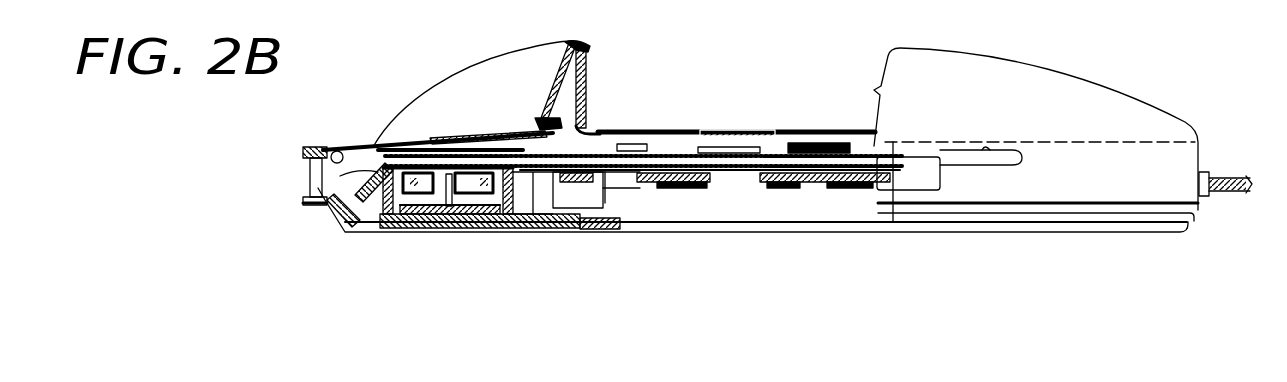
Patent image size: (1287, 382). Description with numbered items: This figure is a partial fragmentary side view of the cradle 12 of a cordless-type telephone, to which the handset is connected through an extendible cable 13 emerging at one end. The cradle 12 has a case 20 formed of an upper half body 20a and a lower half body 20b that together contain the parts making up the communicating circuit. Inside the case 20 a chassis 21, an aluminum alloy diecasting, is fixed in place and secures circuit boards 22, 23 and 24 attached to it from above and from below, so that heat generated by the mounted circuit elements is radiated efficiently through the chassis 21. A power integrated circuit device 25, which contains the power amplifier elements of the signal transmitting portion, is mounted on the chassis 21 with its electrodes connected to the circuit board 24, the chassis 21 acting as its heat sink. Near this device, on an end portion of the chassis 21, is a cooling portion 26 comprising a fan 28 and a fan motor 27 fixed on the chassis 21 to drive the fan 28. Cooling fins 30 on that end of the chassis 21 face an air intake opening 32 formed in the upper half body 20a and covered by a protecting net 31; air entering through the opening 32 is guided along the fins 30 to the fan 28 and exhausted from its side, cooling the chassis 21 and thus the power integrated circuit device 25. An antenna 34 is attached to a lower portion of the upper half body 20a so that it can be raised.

The cradle 12 is at (1074, 55).
The extendible cable 13 is at (1228, 180).
The case 20 is at (758, 255).
The upper half body 20a is at (1068, 190).
The lower half body 20b is at (1035, 268).
The chassis 21 is at (536, 174).
The circuit board 22 is at (675, 148).
The circuit board 23 is at (816, 188).
The circuit board 24 is at (719, 188).
The power integrated circuit device 25 is at (590, 208).
The cooling portion 26 is at (371, 148).
The fan motor 27 is at (440, 208).
The fan 28 is at (473, 206).
The cooling fins 30 is at (322, 178).
The protecting net 31 is at (337, 150).
The air intake opening 32 is at (318, 147).
The antenna 34 is at (948, 157).